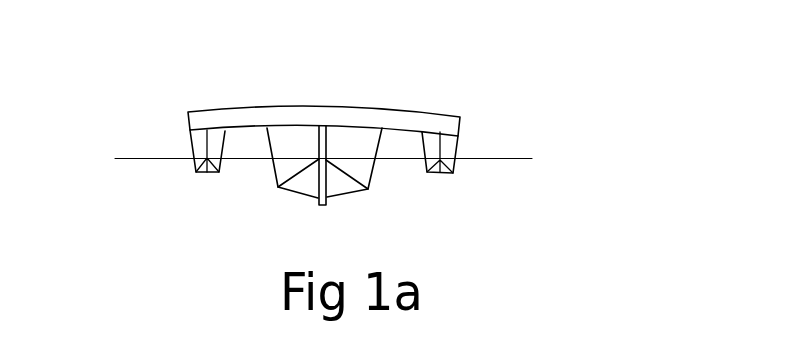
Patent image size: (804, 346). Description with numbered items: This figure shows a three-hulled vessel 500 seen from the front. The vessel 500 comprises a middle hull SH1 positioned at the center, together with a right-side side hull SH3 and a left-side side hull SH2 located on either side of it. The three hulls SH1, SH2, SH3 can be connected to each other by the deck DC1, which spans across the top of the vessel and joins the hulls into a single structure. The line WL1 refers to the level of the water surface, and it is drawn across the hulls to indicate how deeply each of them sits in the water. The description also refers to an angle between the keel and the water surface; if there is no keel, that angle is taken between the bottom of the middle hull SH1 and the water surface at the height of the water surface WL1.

The three-hulled vessel 500 is at (366, 134).
The deck DC1 is at (247, 108).
The water surface level WL1 is at (131, 157).
The middle hull SH1 is at (350, 192).
The left-side side hull SH2 is at (447, 175).
The right-side side hull SH3 is at (196, 174).